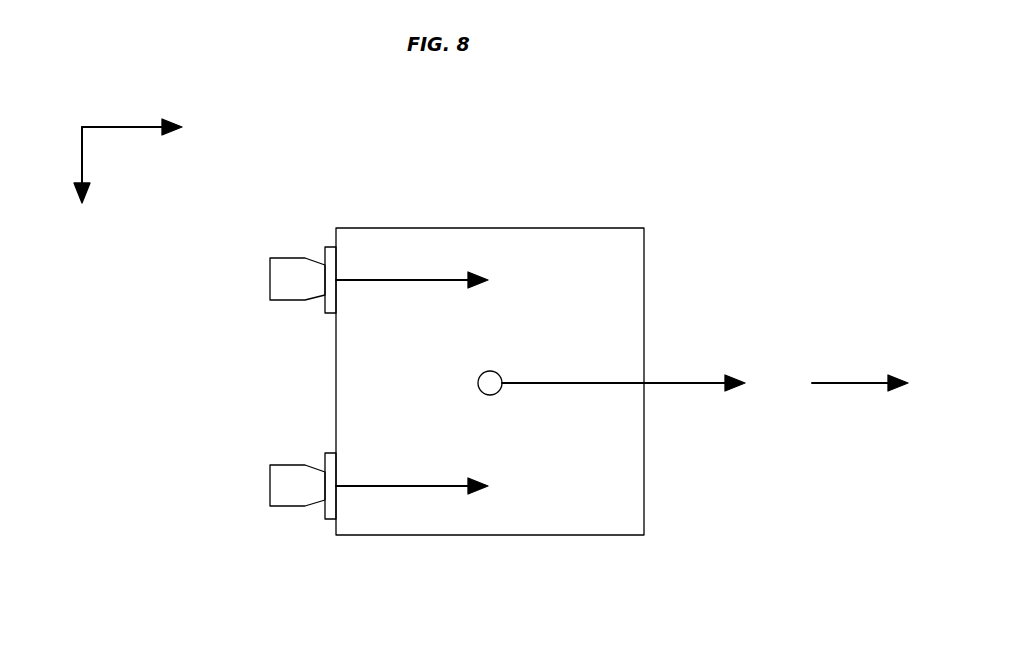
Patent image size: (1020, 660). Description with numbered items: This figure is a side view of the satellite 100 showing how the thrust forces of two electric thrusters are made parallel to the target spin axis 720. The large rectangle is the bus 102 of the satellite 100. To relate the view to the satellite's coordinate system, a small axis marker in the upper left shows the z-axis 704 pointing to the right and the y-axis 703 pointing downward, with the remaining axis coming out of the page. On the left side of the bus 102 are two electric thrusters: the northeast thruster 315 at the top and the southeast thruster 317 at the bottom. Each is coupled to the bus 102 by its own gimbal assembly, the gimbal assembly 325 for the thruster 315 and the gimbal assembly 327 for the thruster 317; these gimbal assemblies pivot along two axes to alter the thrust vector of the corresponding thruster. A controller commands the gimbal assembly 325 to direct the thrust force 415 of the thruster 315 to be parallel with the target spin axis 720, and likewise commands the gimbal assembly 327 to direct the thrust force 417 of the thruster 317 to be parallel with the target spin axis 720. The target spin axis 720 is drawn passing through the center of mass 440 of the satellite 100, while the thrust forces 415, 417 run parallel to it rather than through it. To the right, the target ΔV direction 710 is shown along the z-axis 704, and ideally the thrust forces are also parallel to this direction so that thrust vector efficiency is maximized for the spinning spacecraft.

The satellite 100 is at (130, 335).
The bus 102 is at (645, 300).
The northeast thruster 315 is at (285, 258).
The southeast thruster 317 is at (295, 465).
The gimbal assembly 325 is at (321, 311).
The gimbal assembly 327 is at (322, 513).
The thrust force 415 is at (402, 281).
The thrust force 417 is at (438, 487).
The center of mass 440 is at (485, 395).
The y-axis 703 is at (88, 177).
The z-axis 704 is at (147, 128).
The target ΔV direction 710 is at (850, 384).
The target spin axis 720 is at (688, 384).